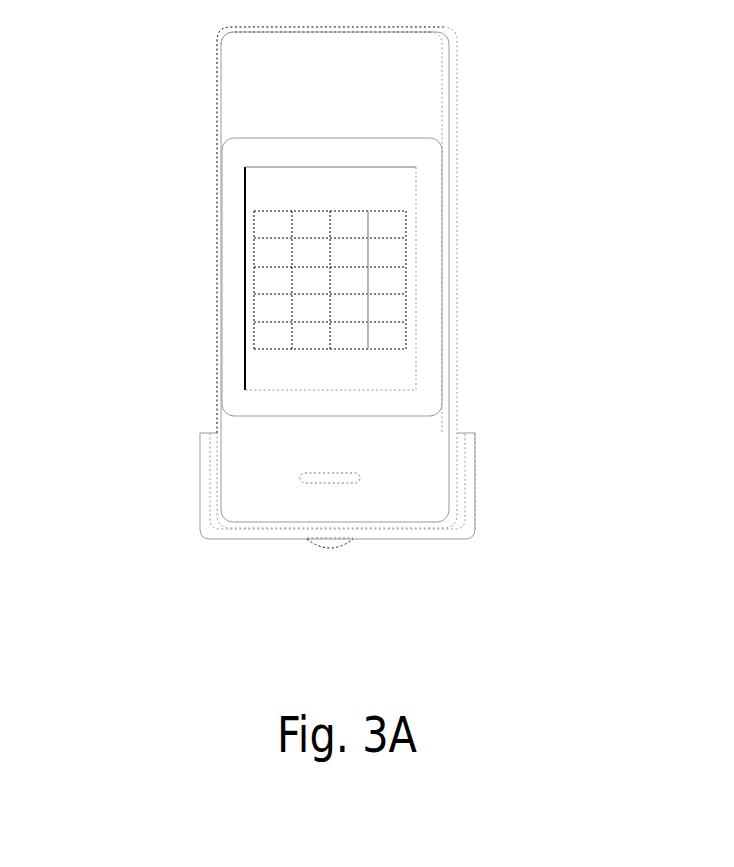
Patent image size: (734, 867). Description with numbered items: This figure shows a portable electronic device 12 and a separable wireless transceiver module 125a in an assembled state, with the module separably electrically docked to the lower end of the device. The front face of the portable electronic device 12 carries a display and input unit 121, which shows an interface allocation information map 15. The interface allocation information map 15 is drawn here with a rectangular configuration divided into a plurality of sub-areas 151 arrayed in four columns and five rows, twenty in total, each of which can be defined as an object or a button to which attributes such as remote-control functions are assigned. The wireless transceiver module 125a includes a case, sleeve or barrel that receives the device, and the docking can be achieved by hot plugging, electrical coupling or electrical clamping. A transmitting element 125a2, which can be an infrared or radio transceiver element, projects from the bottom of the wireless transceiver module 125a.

The portable electronic device 12 is at (457, 242).
The display and input unit 121 is at (273, 373).
The interface allocation information map 15 is at (402, 227).
The sub-areas 151 is at (262, 220).
The wireless transceiver module 125a is at (473, 470).
The transmitting element 125a2 is at (328, 540).